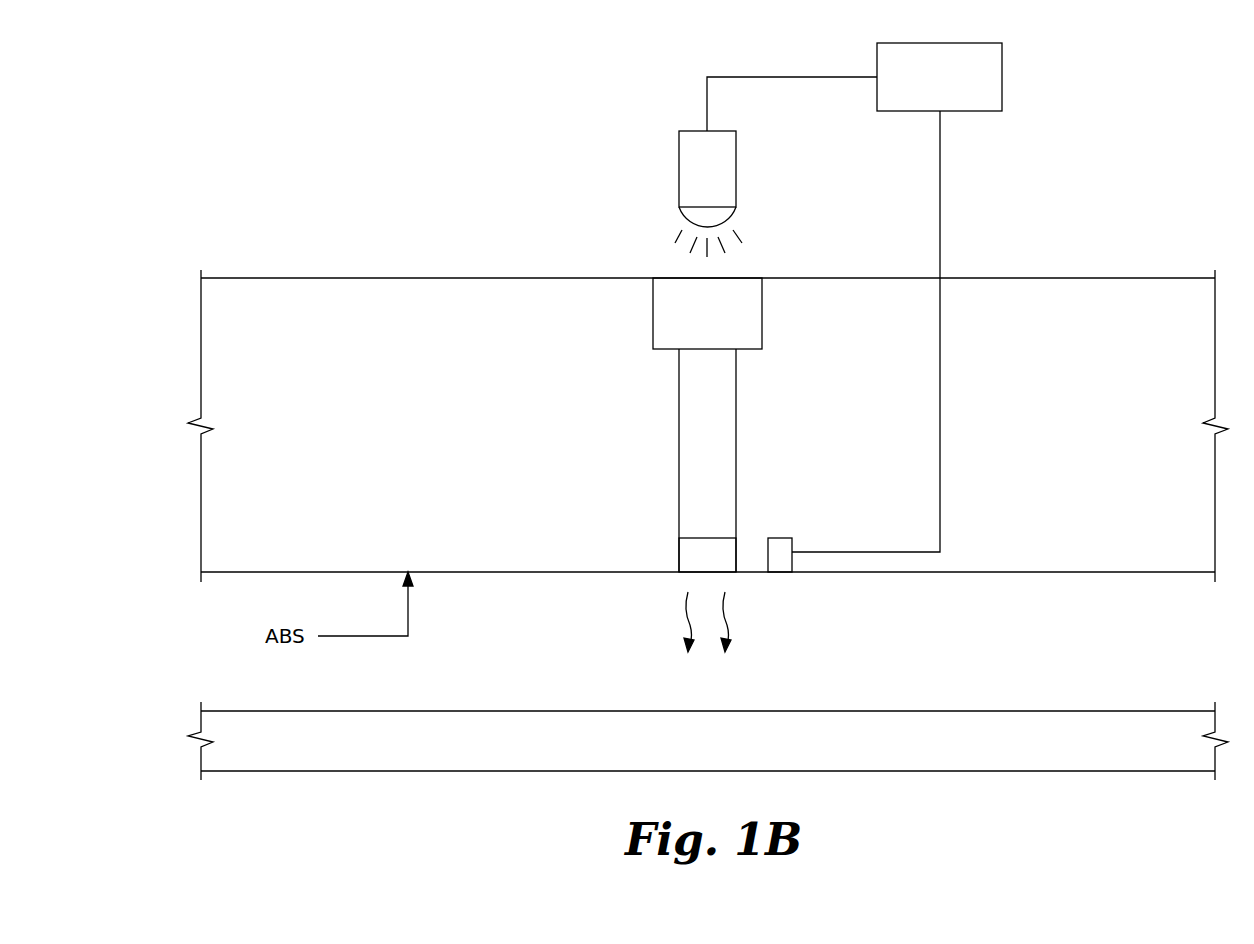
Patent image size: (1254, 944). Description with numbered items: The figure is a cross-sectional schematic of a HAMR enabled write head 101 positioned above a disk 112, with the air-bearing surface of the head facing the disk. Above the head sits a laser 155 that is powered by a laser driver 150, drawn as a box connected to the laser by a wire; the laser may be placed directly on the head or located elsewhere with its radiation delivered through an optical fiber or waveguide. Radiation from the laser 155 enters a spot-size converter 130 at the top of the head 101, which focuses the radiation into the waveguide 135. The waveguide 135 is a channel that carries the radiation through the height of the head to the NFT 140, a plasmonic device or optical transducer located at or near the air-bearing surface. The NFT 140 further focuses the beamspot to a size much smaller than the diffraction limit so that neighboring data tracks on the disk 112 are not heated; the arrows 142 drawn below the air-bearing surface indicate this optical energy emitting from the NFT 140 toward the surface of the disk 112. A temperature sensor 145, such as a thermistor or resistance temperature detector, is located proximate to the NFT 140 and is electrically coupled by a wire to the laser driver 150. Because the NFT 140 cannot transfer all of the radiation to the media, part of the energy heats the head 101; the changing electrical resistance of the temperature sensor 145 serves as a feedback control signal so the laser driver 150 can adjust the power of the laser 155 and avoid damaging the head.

The HAMR enabled write head 101 is at (300, 222).
The disk 112 is at (1010, 772).
The spot-size converter 130 is at (653, 318).
The waveguide 135 is at (679, 437).
The NFT 140 is at (679, 550).
The arrows 142 is at (658, 610).
The temperature sensor 145 is at (781, 572).
The laser driver 150 is at (1005, 62).
The laser 155 is at (687, 150).